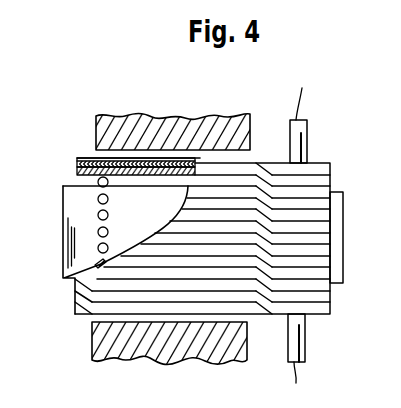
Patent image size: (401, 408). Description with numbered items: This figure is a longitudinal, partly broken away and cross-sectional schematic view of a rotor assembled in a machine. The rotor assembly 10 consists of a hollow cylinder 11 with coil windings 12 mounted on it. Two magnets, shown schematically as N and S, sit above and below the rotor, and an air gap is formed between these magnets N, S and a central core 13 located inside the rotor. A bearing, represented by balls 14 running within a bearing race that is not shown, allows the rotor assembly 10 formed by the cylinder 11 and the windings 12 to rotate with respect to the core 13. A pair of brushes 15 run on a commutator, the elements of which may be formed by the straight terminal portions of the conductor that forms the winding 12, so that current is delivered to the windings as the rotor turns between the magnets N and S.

The rotor assembly 10 is at (60, 236).
The hollow cylinder 11 is at (80, 168).
The coil windings 12 is at (82, 159).
The central core 13 is at (68, 260).
The balls 14 is at (112, 215).
The brushes 15 is at (311, 143).
The magnet N is at (167, 118).
The magnet S is at (178, 361).